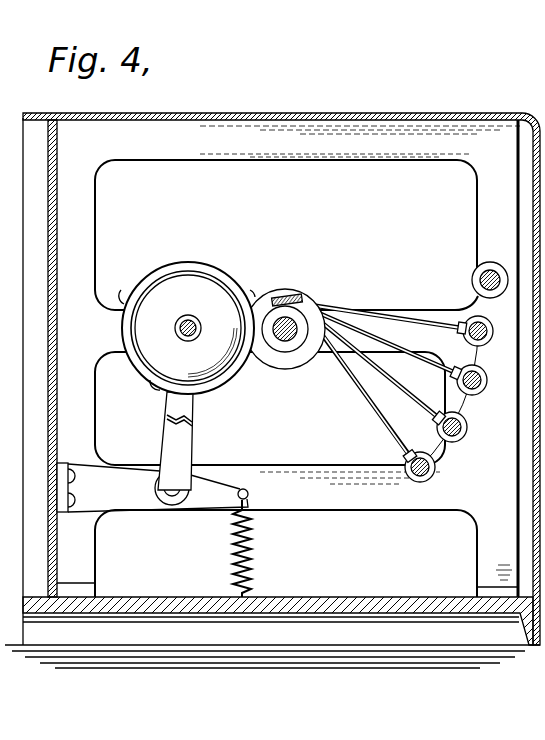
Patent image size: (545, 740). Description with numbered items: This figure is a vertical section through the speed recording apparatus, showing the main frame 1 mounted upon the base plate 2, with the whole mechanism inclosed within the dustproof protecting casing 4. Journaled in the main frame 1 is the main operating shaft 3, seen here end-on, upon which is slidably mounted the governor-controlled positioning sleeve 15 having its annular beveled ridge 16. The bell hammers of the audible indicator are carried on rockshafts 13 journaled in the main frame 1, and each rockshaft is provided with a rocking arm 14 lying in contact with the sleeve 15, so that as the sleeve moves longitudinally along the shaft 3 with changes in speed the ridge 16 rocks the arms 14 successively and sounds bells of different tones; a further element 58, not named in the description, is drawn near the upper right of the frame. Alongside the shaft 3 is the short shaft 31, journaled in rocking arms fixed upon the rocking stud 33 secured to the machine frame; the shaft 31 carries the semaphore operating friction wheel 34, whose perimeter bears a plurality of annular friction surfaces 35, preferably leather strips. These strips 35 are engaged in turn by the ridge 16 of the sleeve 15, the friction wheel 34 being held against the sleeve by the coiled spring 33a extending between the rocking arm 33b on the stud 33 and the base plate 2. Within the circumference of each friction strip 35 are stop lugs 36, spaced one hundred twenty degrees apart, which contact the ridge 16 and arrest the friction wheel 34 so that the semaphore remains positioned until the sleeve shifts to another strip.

The main frame 1 is at (88, 208).
The base plate 2 is at (330, 599).
The main operating shaft 3 is at (285, 341).
The casing 4 is at (533, 205).
The rockshafts 13 is at (490, 351).
The rocking arm 14 is at (366, 318).
The positioning sleeve 15 is at (264, 352).
The annular beveled ridge 16 is at (300, 368).
The short shaft 31 is at (190, 320).
The rocking stud 33 is at (170, 492).
The coiled spring 33a is at (252, 541).
The rocking arm 33b is at (210, 498).
The semaphore operating friction wheel 34 is at (178, 280).
The annular friction surfaces 35 is at (208, 265).
The stop lugs 36 is at (122, 290).
The terminal 58 is at (478, 272).